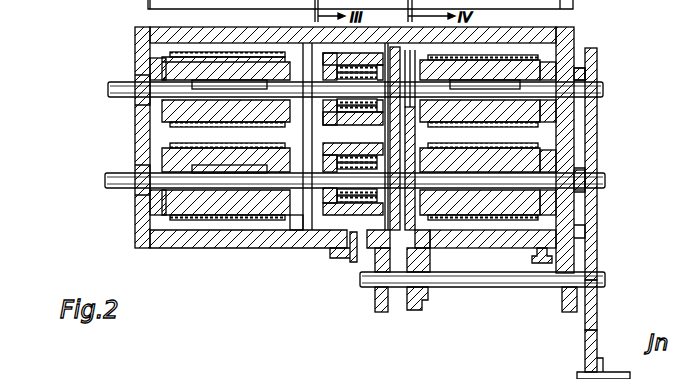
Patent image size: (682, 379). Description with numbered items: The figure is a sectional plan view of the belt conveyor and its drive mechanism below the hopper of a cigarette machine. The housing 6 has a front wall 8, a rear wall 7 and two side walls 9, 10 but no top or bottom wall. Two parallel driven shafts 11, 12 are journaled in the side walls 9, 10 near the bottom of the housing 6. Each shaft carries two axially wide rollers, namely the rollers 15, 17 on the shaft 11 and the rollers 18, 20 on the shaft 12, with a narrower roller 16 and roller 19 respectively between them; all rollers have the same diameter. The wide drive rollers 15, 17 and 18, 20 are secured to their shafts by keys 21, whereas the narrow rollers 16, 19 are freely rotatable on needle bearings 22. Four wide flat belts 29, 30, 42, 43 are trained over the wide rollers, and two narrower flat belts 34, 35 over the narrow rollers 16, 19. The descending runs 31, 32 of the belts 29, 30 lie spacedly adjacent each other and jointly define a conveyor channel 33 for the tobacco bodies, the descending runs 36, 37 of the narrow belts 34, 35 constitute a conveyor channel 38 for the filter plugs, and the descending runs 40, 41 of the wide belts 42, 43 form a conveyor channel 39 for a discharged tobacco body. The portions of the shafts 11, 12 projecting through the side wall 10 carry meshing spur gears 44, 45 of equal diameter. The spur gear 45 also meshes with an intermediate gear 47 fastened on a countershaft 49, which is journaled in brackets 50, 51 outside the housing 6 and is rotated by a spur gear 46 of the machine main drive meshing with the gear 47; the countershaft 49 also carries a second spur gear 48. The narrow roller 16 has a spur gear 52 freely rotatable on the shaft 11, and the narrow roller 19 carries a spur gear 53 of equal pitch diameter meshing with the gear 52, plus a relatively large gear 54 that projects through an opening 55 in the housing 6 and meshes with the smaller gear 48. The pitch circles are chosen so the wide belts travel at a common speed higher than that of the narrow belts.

The housing 6 is at (580, 40).
The rear wall 7 is at (556, 28).
The front wall 8 is at (248, 248).
The side wall 9 is at (135, 141).
The side wall 10 is at (574, 150).
The driven shaft 11 is at (108, 92).
The driven shaft 12 is at (105, 182).
The wide drive roller 15 is at (150, 60).
The narrow roller 16 is at (312, 45).
The wide drive roller 17 is at (540, 68).
The wide drive roller 18 is at (137, 228).
The narrow roller 19 is at (320, 250).
The wide drive roller 20 is at (545, 212).
The key 21 is at (205, 80).
The needle bearing 22 is at (298, 235).
The wide flat belt 29 is at (250, 55).
The wide flat belt 30 is at (222, 242).
The descending run 31 is at (262, 120).
The descending run 32 is at (290, 155).
The conveyor channel 33 is at (227, 137).
The narrow flat belt 34 is at (380, 60).
The narrow flat belt 35 is at (354, 258).
The descending run 36 is at (424, 168).
The descending run 37 is at (324, 99).
The conveyor channel 38 is at (383, 112).
The conveyor channel 39 is at (480, 136).
The descending run 40 is at (542, 136).
The descending run 41 is at (483, 115).
The wide flat belt 42 is at (518, 50).
The wide flat belt 43 is at (526, 260).
The spur gear 44 is at (597, 118).
The spur gear 45 is at (598, 193).
The spur gear 46 is at (597, 358).
The intermediate gear 47 is at (597, 310).
The second spur gear 48 is at (412, 306).
The countershaft 49 is at (483, 282).
The bracket 50 is at (388, 302).
The bracket 51 is at (572, 312).
The spur gear 52 is at (410, 80).
The spur gear 53 is at (493, 251).
The large gear 54 is at (430, 260).
The opening 55 is at (391, 260).